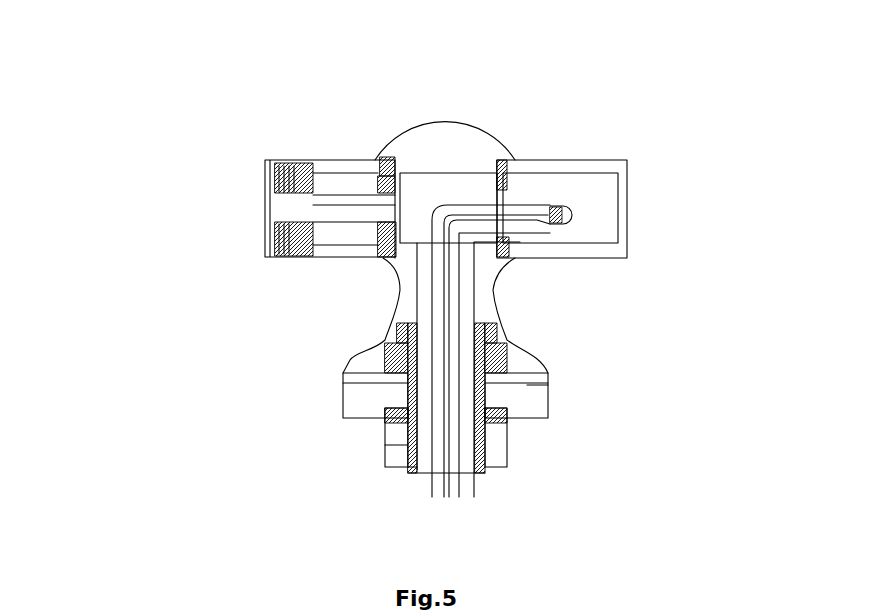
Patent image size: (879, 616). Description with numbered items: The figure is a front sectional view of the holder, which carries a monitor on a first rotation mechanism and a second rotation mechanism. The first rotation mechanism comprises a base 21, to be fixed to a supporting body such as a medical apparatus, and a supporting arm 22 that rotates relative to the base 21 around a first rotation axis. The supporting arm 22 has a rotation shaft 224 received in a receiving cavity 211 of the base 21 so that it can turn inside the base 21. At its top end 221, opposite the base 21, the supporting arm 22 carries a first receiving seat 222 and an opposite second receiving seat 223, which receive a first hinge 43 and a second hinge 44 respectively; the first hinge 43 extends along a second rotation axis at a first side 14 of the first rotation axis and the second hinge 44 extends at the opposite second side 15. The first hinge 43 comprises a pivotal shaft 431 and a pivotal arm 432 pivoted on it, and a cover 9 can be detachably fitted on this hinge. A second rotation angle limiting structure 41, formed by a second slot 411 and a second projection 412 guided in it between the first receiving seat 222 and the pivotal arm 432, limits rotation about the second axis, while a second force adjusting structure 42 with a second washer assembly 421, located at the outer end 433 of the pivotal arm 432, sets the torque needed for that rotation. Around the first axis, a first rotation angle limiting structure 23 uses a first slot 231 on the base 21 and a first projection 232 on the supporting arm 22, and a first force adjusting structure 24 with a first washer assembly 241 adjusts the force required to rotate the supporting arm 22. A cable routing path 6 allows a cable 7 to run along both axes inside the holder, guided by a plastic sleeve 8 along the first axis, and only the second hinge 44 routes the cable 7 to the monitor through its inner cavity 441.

The cable routing path 6 is at (432, 305).
The cable 7 is at (448, 380).
The sleeve 8 is at (410, 467).
The cover 9 is at (270, 180).
The first side 14 is at (113, 136).
The second side 15 is at (737, 134).
The base 21 is at (343, 408).
The supporting arm 22 is at (487, 317).
The first rotation angle limiting structure 23 is at (400, 375).
The first force adjusting structure 24 is at (490, 417).
The second rotation angle limiting structure 41 is at (323, 170).
The second force adjusting structure 42 is at (300, 182).
The first hinge 43 is at (318, 127).
The second hinge 44 is at (563, 167).
The receiving cavity 211 is at (480, 395).
The top end 221 is at (493, 167).
The first receiving seat 222 is at (390, 167).
The second receiving seat 223 is at (530, 165).
The rotation shaft 224 is at (392, 445).
The first slot 231 is at (527, 385).
The first projection 232 is at (400, 383).
The first washer assembly 241 is at (413, 420).
The second slot 411 is at (385, 247).
The second projection 412 is at (383, 245).
The second washer assembly 421 is at (307, 238).
The pivotal shaft 431 is at (323, 210).
The pivotal arm 432 is at (350, 245).
The outer end 433 is at (340, 178).
The inner cavity 441 is at (587, 213).